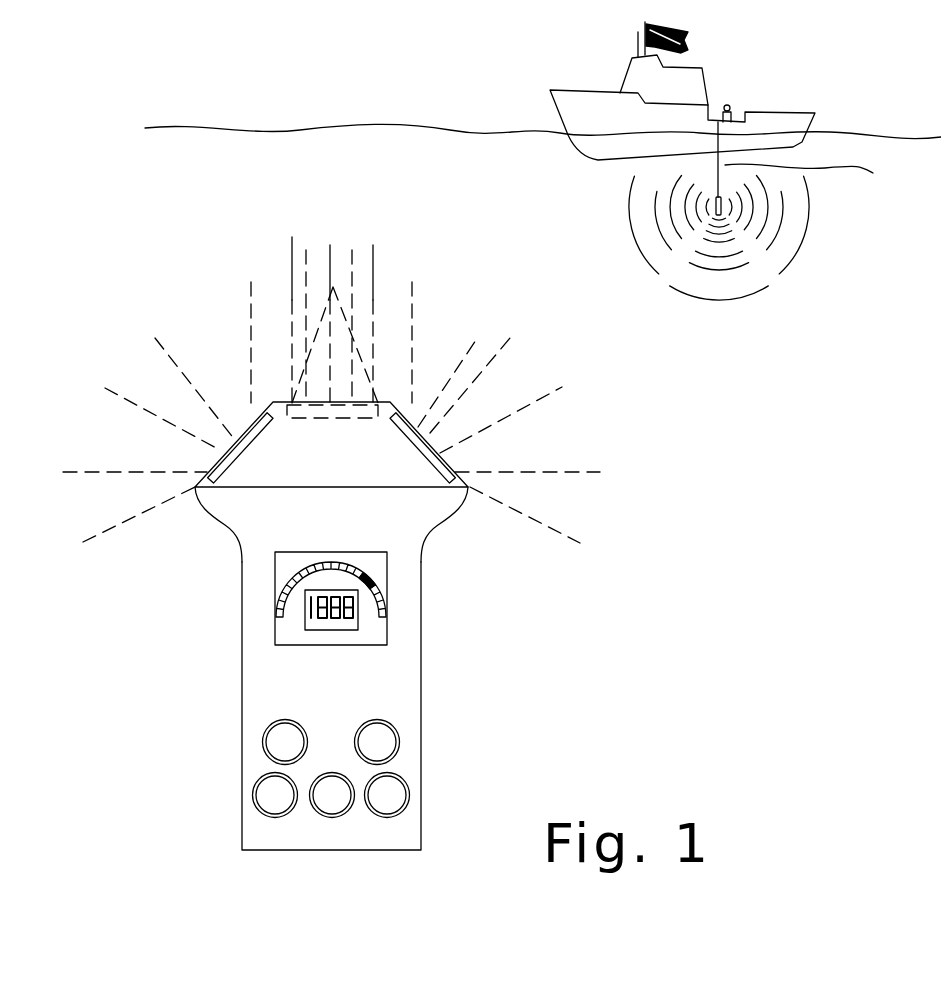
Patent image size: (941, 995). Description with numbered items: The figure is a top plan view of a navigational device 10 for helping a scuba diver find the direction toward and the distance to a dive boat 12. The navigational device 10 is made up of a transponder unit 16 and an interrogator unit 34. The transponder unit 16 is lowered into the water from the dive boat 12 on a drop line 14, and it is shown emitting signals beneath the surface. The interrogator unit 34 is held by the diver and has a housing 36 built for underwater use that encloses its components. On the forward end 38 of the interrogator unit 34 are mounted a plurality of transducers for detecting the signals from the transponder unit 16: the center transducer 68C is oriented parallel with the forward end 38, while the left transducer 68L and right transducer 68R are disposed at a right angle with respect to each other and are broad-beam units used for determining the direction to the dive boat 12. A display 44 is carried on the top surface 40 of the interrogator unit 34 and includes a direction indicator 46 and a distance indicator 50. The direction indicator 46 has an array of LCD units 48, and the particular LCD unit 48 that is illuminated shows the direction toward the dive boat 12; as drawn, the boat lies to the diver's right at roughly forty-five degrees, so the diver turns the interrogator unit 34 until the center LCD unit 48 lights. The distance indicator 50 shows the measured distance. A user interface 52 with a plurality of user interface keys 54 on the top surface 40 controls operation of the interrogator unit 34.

The navigational device 10 is at (421, 570).
The dive boat 12 is at (820, 127).
The drop line 14 is at (817, 172).
The transponder unit 16 is at (727, 217).
The interrogator unit 34 is at (432, 670).
The housing 36 is at (227, 533).
The forward end 38 is at (359, 369).
The top surface 40 is at (291, 680).
The display 44 is at (382, 591).
The direction indicator 46 is at (308, 566).
The LCD unit 48 is at (351, 571).
The distance indicator 50 is at (332, 630).
The user interface 52 is at (373, 798).
The user interface keys 54 is at (380, 742).
The left transducer 68L is at (270, 450).
The right transducer 68R is at (456, 394).
The center transducer 68C is at (330, 403).